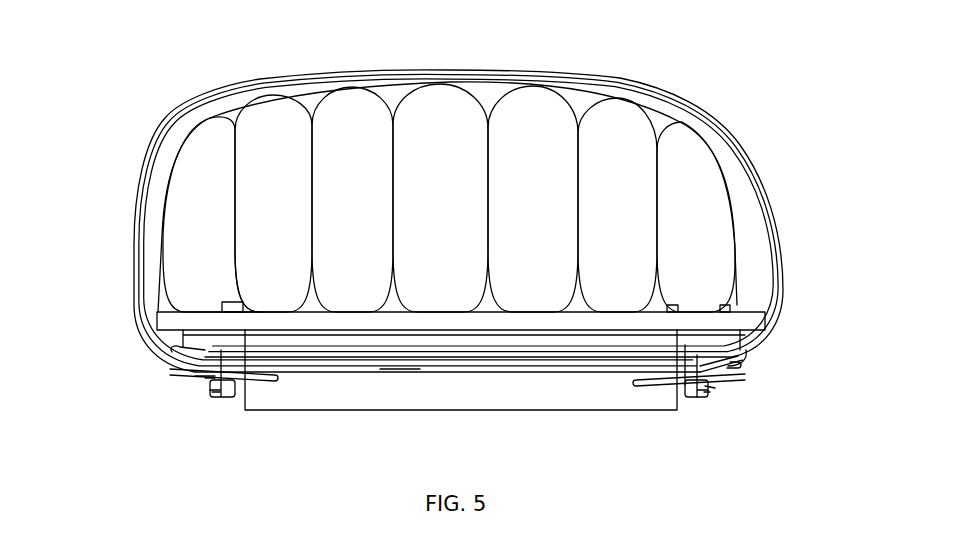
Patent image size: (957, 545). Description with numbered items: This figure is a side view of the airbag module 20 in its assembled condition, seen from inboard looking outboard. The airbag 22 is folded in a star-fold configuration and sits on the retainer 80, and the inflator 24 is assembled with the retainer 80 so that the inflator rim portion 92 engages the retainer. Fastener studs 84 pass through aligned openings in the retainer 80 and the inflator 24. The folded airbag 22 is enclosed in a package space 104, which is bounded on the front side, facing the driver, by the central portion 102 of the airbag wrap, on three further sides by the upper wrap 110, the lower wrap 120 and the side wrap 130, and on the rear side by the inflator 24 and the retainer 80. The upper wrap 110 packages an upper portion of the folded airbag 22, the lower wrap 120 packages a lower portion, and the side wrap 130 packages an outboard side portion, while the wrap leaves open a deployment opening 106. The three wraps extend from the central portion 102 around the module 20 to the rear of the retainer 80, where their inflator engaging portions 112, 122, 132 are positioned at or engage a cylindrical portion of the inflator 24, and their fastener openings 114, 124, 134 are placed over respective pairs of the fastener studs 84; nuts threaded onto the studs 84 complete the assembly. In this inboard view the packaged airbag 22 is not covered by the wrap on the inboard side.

The airbag module 20 is at (186, 69).
The airbag 22 is at (432, 117).
The inflator 24 is at (333, 400).
The retainer 80 is at (165, 322).
The fastener studs 84 is at (227, 387).
The inflator rim portion 92 is at (748, 352).
The central portion 102 is at (467, 72).
The package space 104 is at (753, 280).
The deployment opening 106 is at (488, 282).
The upper wrap 110 is at (773, 220).
The inflator engaging portion 112 is at (606, 363).
The fastener opening 114 is at (205, 376).
The lower wrap 120 is at (135, 232).
The inflator engaging portion 122 is at (402, 372).
The fastener opening 124 is at (210, 378).
The side wrap 130 is at (178, 372).
The inflator engaging portion 132 is at (273, 382).
The fastener opening 134 is at (217, 388).